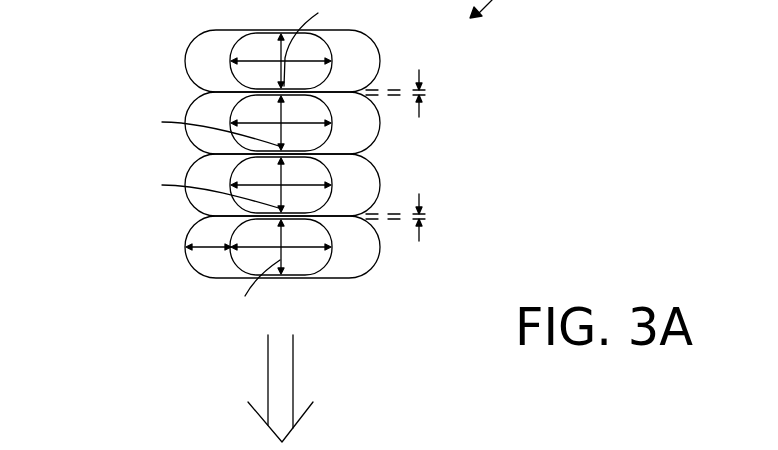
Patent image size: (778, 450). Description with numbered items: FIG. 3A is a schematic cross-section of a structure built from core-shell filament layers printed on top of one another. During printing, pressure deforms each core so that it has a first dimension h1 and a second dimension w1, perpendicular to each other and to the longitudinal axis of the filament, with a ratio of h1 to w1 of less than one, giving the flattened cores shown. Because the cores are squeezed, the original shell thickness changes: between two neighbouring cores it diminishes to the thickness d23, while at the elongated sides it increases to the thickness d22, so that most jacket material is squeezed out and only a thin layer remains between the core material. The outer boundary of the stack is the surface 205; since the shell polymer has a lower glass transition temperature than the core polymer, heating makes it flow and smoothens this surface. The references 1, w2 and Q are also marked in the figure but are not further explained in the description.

The optical fibre ribbon / product 1 is at (575, 58).
The surface 205 is at (124, 193).
The first dimension h1 is at (262, 238).
The second dimension w1 is at (312, 40).
The width of flat fibre w2 is at (298, 278).
The shell thickness at elongated sides d22 is at (205, 252).
The shell thickness between cores d23 is at (420, 155).
The direction of heat/flow Q is at (287, 388).